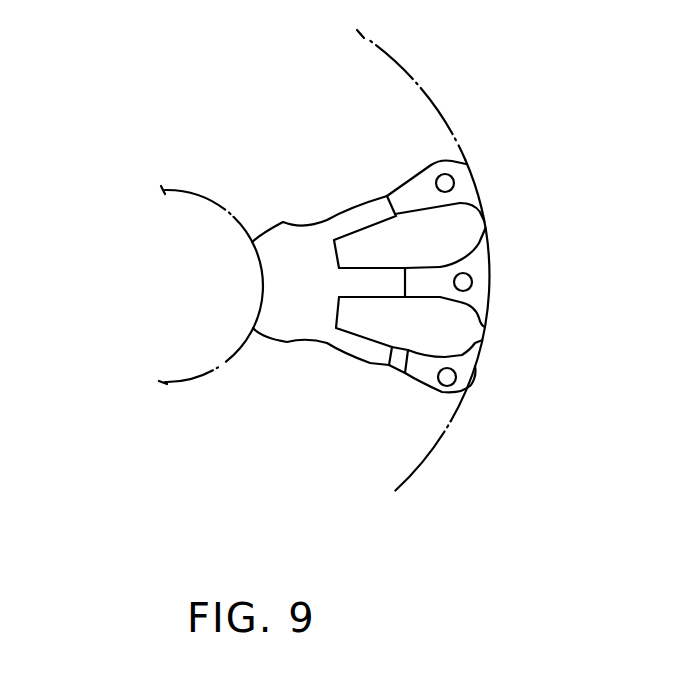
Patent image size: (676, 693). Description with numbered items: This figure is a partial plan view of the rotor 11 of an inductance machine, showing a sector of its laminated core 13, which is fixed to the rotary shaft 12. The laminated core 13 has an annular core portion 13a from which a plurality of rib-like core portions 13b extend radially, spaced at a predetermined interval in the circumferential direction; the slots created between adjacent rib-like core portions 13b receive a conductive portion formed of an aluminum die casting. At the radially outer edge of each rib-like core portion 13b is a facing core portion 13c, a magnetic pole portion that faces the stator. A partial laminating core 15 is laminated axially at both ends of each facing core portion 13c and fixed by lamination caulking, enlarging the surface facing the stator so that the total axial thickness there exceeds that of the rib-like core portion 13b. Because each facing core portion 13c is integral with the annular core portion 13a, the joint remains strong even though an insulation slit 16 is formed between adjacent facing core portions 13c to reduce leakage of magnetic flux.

The rotor 11 is at (313, 163).
The rotary shaft 12 is at (203, 283).
The laminated core 13 is at (338, 522).
The annular core portion 13a is at (287, 317).
The rib-like core portion 13b is at (383, 287).
The facing core portion 13c is at (467, 303).
The partial laminating core 15 is at (462, 193).
The insulation slit 16 is at (483, 227).